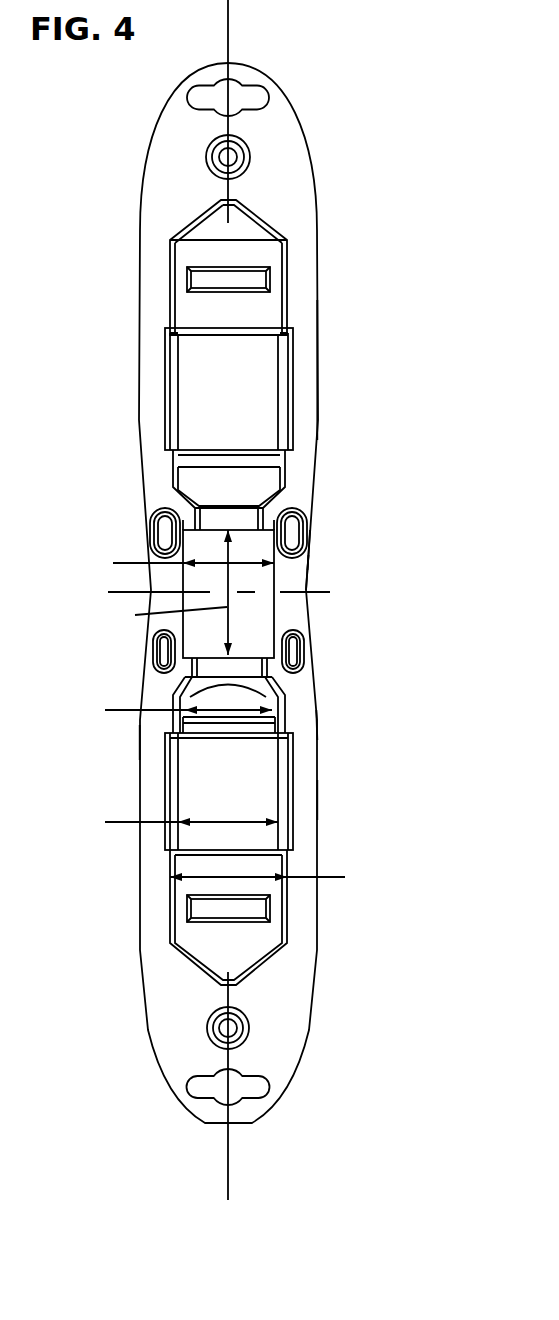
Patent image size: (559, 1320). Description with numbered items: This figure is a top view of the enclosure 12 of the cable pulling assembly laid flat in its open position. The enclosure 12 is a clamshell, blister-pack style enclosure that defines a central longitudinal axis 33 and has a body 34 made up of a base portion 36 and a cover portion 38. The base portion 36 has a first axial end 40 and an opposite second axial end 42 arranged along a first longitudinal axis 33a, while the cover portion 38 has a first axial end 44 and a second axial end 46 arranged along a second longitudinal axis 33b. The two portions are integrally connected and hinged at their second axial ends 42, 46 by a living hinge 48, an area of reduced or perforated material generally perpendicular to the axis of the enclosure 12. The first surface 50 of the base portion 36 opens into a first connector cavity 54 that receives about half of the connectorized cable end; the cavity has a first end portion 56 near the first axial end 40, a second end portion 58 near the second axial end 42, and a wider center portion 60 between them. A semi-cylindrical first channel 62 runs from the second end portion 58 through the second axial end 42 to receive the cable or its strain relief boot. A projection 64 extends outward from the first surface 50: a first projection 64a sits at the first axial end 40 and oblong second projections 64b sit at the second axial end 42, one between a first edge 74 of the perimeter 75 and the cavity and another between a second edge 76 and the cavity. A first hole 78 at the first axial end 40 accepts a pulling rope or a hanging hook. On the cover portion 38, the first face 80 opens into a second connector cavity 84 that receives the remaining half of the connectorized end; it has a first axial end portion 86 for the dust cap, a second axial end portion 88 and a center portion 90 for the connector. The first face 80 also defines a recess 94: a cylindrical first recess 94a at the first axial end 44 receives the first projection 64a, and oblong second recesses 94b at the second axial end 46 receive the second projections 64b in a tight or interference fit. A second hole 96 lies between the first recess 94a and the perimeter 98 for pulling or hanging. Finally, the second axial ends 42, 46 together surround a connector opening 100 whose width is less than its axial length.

The enclosure 12 is at (121, 132).
The central longitudinal axis 33 is at (225, 1192).
The first longitudinal axis 33a is at (226, 1157).
The second longitudinal axis 33b is at (226, 32).
The body 34 is at (129, 248).
The base portion 36 is at (335, 852).
The cover portion 38 is at (328, 282).
The first axial end 40 is at (294, 1072).
The second axial end 42 is at (311, 640).
The first axial end 44 is at (301, 128).
The second axial end 46 is at (311, 558).
The living hinge 48 is at (354, 571).
The first surface 50 is at (184, 1004).
The first connector cavity 54 is at (173, 797).
The first end portion 56 is at (276, 930).
The second end portion 58 is at (261, 697).
The center portion 60 is at (259, 775).
The first channel 62 is at (243, 670).
The projection 64 is at (148, 647).
The first projection 64a is at (209, 1040).
The second projections 64b is at (300, 660).
The first edge 74 is at (319, 725).
The perimeter 75 is at (320, 800).
The second edge 76 is at (140, 742).
The first hole 78 is at (236, 1104).
The first face 80 is at (192, 187).
The second connector cavity 84 is at (278, 353).
The first axial end portion 86 is at (279, 253).
The second axial end portion 88 is at (276, 478).
The center portion 90 is at (271, 424).
The recess 94 is at (143, 537).
The first recess 94a is at (251, 157).
The second recesses 94b is at (299, 530).
The second hole 96 is at (228, 85).
The perimeter 98 is at (320, 377).
The connector opening 100 is at (266, 605).